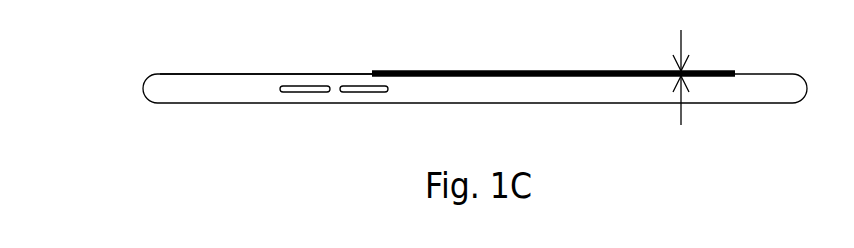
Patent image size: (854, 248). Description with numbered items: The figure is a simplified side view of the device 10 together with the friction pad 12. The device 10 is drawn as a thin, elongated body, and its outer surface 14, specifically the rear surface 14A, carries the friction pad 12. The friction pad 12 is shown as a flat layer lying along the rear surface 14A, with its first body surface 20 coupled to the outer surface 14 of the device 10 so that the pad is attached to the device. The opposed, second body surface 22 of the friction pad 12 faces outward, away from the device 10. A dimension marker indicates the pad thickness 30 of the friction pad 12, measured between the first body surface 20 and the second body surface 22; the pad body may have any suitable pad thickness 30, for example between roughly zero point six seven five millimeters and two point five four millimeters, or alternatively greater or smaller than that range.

The device 10 is at (136, 66).
The outer surface 14 is at (230, 74).
The rear surface 14A is at (305, 73).
The friction pad 12 is at (567, 71).
The second body surface 22 is at (453, 71).
The first body surface 20 is at (423, 74).
The pad thickness 30 is at (681, 112).